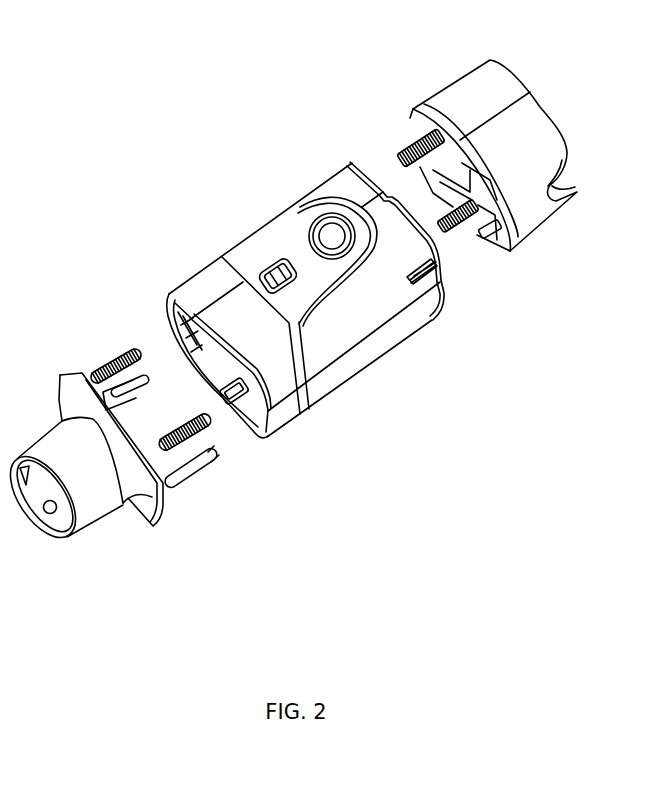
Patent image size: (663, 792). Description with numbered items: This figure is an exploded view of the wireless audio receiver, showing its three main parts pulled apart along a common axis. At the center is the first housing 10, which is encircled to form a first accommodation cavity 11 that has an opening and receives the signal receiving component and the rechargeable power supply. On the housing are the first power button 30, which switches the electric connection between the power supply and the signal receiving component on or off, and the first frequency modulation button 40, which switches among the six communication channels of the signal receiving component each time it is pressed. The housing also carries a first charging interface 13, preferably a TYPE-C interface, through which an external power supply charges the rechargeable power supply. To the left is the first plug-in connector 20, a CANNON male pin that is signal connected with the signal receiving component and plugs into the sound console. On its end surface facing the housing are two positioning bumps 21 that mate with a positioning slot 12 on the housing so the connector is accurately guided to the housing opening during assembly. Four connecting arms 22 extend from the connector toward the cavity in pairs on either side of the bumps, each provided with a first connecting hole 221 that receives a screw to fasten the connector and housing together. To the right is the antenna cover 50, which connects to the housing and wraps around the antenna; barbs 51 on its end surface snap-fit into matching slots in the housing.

The first housing 10 is at (365, 353).
The first accommodation cavity 11 is at (202, 352).
The positioning slot 12 is at (247, 430).
The first charging interface 13 is at (428, 296).
The first plug-in connector 20 is at (119, 549).
The positioning bump 21 is at (112, 362).
The connecting arm 22 is at (127, 348).
The first connecting hole 221 is at (214, 460).
The first power button 30 is at (267, 267).
The first frequency modulation button 40 is at (330, 226).
The antenna cover 50 is at (480, 80).
The barb 51 is at (410, 137).